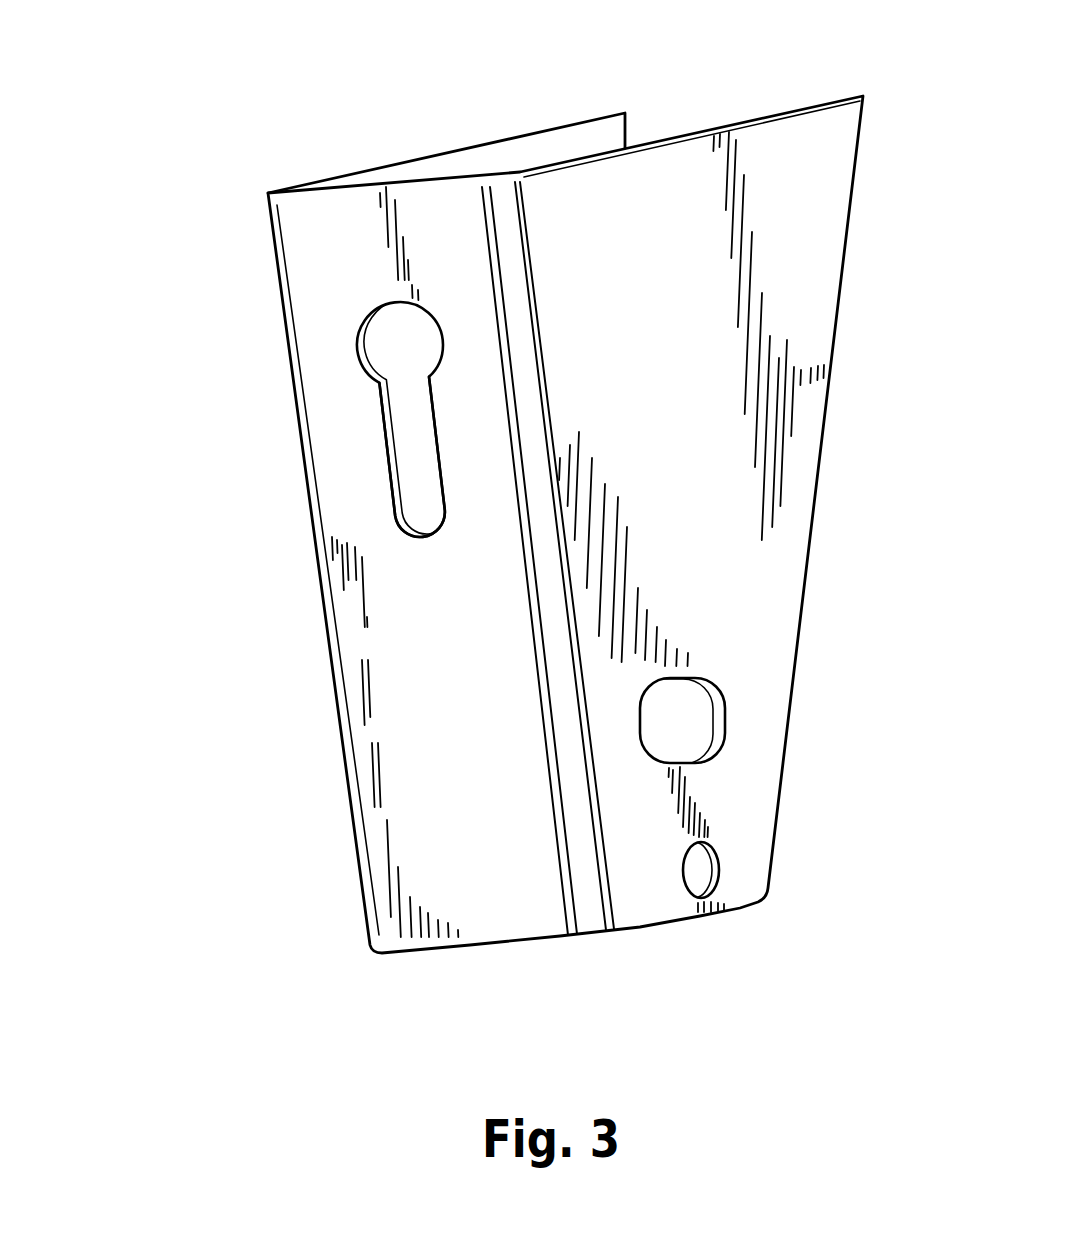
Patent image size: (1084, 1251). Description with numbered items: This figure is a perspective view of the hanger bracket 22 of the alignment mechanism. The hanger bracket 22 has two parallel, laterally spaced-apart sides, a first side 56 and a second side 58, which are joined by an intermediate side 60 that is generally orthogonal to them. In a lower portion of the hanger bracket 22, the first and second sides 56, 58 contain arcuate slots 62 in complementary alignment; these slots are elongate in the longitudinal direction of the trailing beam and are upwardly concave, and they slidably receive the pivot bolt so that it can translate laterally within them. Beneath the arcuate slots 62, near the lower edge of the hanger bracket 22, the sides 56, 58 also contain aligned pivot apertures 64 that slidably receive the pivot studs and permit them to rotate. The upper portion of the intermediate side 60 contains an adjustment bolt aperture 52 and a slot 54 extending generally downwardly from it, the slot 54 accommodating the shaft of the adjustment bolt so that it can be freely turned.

The hanger bracket 22 is at (277, 280).
The adjustment bolt aperture 52 is at (367, 370).
The slot 54 is at (395, 482).
The first side 56 is at (808, 353).
The second side 58 is at (578, 120).
The intermediate side 60 is at (375, 683).
The arcuate slot 62 is at (718, 710).
The pivot aperture 64 is at (712, 865).